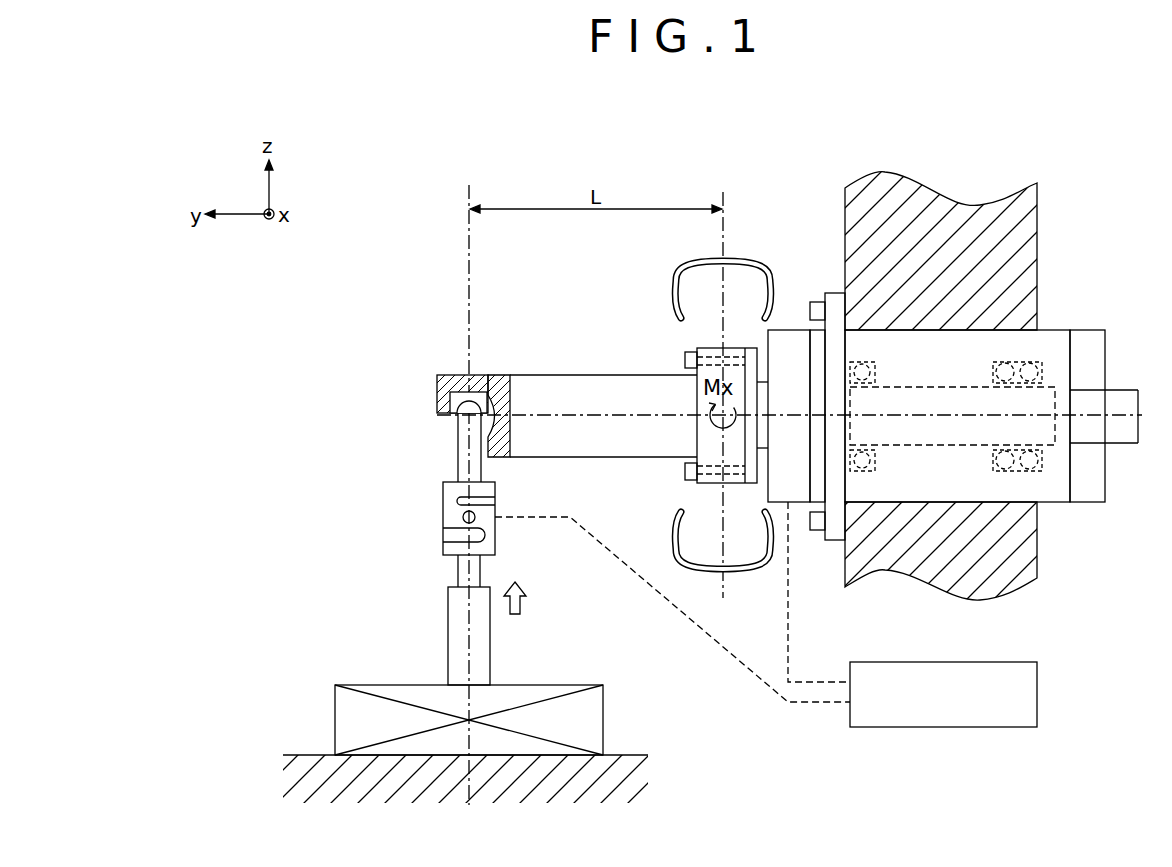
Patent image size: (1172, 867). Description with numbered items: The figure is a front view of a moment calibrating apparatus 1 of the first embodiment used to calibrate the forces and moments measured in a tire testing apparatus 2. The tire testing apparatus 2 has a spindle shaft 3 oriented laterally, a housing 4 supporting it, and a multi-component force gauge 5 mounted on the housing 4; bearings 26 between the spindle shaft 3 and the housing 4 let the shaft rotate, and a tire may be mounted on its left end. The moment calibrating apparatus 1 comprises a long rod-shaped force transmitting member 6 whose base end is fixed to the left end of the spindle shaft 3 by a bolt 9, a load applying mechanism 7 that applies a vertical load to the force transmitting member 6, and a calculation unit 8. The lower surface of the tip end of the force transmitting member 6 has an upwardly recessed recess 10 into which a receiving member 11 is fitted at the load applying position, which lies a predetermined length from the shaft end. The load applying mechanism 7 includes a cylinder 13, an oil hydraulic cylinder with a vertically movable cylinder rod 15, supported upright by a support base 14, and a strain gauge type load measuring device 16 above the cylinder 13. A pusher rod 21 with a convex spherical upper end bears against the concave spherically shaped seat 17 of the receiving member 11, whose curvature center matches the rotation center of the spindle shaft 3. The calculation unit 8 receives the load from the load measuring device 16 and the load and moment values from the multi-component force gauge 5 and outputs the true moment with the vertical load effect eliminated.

The moment calibrating apparatus 1 is at (759, 156).
The tire testing apparatus 2 is at (1101, 660).
The spindle shaft 3 is at (1080, 390).
The housing 4 is at (1056, 335).
The multi-component force gauge 5 is at (790, 342).
The force transmitting member 6 is at (630, 455).
The load applying mechanism 7 is at (353, 505).
The calculation unit 8 is at (955, 727).
The bolt 9 is at (685, 360).
The recess 10 is at (501, 392).
The receiving member 11 is at (437, 403).
The cylinder 13 is at (448, 648).
The support base 14 is at (340, 722).
The cylinder rod 15 is at (458, 572).
The load measuring device 16 is at (443, 518).
The spherically shaped seat 17 is at (457, 392).
The pusher rod 21 is at (458, 452).
The bearings 26 is at (1042, 458).